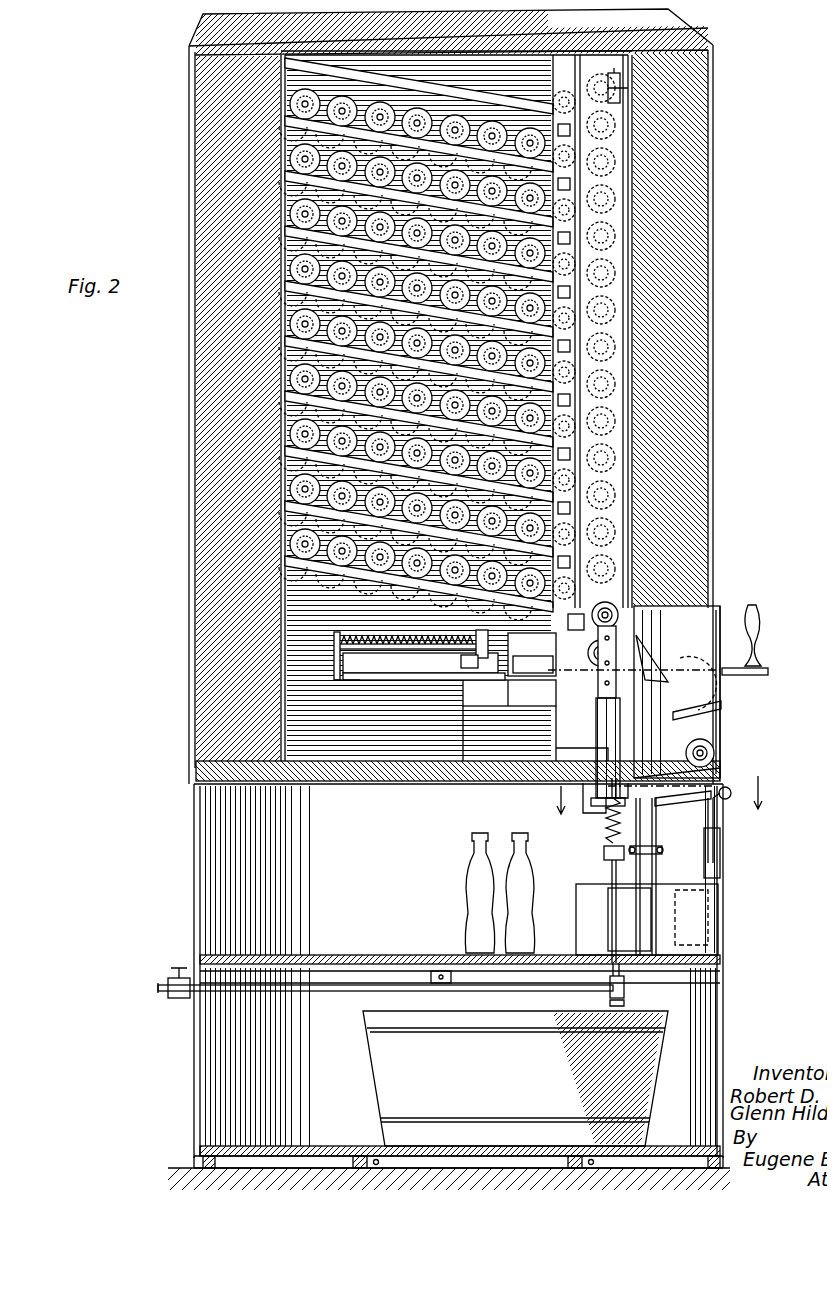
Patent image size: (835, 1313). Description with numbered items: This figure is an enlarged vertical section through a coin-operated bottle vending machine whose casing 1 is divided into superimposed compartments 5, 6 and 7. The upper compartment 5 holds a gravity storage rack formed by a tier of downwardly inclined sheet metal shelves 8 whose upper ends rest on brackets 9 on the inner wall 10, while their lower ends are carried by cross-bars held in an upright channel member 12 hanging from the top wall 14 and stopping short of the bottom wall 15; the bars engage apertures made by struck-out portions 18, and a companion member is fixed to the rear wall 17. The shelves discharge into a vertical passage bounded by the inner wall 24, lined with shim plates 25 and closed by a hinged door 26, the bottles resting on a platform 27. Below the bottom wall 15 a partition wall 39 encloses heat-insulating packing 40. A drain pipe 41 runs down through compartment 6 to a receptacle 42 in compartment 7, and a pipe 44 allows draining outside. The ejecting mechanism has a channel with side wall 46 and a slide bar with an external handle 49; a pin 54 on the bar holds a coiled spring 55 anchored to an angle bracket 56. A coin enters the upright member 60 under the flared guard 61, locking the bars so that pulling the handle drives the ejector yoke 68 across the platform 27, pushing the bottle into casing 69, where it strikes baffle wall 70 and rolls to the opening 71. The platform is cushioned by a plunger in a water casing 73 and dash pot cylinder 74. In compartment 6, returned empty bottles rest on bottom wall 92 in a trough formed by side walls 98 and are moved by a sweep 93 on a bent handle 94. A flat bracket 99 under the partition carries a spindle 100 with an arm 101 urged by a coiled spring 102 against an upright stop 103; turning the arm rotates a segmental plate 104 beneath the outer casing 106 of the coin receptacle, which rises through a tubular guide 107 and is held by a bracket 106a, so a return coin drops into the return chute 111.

The casing 1 is at (700, 522).
The upper compartment 5 is at (416, 360).
The compartment 6 is at (458, 870).
The compartment 7 is at (458, 1068).
The sheet metal shelves 8 is at (416, 588).
The brackets 9 is at (417, 343).
The inner wall 10 is at (419, 407).
The outer channel member 12 is at (570, 614).
The top wall 14 is at (419, 85).
The bottom wall 15 is at (432, 749).
The rear wall 17 is at (550, 300).
The struck-out portions 18 is at (548, 282).
The upright inner wall 24 is at (632, 610).
The shim plates 25 is at (700, 203).
The door 26 is at (612, 82).
The platform 27 is at (596, 668).
The horizontal partition wall 39 is at (380, 773).
The heat-insulating packing 40 is at (190, 468).
The drain pipe 41 is at (614, 968).
The receptacle 42 is at (490, 1059).
The pipe 44 is at (360, 983).
The side wall 46 is at (395, 665).
The actuating handle 49 is at (745, 612).
The upright pin 54 is at (472, 624).
The coiled spring 55 is at (378, 632).
The angle bracket 56 is at (329, 645).
The upright member 60 is at (553, 630).
The guard 61 is at (560, 645).
The ejector yoke 68 is at (540, 676).
The casing 69 is at (712, 680).
The baffle wall 70 is at (697, 688).
The opening 71 is at (713, 715).
The casing 73 is at (447, 773).
The dash pot cylinder 74 is at (600, 818).
The bottom wall 92 is at (334, 948).
The sweep 93 is at (695, 905).
The bent handle 94 is at (722, 786).
The side walls 98 is at (662, 880).
The flat bracket 99 is at (555, 784).
The spindle 100 is at (598, 845).
The arm 101 is at (652, 842).
The coiled spring 102 is at (615, 805).
The upright stop 103 is at (600, 628).
The segmental plate 104 is at (588, 800).
The outer casing 106 is at (605, 680).
The bracket 106a is at (618, 768).
The tubular guide 107 is at (588, 712).
The return chute 111 is at (690, 800).